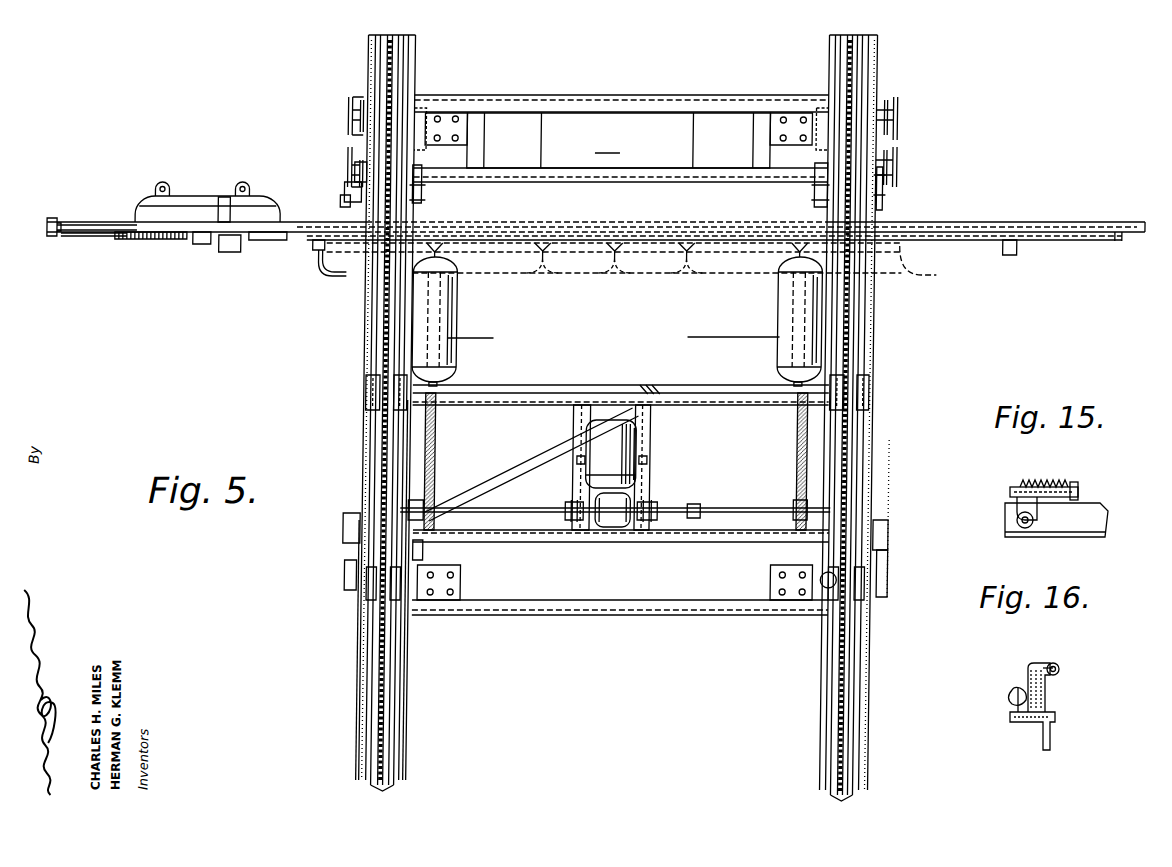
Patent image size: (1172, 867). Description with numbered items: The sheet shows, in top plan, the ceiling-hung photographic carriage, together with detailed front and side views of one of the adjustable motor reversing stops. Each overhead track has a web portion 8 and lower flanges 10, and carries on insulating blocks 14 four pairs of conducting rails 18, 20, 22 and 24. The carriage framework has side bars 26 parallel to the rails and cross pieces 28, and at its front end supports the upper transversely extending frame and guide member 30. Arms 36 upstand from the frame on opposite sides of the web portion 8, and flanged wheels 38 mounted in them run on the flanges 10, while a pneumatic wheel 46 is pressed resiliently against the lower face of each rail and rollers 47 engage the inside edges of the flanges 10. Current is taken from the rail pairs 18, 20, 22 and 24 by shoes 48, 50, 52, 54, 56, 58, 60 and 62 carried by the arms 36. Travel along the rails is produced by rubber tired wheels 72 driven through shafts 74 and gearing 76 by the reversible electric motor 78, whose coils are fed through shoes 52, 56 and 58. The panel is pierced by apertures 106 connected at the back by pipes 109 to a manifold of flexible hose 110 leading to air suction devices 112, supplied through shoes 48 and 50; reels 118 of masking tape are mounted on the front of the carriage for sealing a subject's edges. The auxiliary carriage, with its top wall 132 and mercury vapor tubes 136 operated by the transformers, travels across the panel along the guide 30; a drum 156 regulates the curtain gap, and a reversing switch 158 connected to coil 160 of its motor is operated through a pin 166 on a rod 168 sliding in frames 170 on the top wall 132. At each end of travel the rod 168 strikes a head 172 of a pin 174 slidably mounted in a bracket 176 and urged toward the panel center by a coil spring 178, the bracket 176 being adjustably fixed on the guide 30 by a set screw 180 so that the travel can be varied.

In FIG. 5, the web portion 8 is at (392, 692).
In FIG. 5, the lower flanges 10 is at (395, 750).
In FIG. 5, the insulating blocks 14 is at (373, 390).
In FIG. 5, the conducting rails 18 is at (364, 675).
In FIG. 5, the conducting rails 20 is at (406, 663).
In FIG. 5, the conducting rails 22 is at (826, 720).
In FIG. 5, the conducting rails 24 is at (866, 736).
In FIG. 5, the side bars 26 is at (633, 610).
In FIG. 5, the cross pieces 28 is at (658, 106).
In FIG. 5, the upper frame and guide member 30 is at (294, 222).
In FIG. 16, the upper frame and guide member 30 is at (1057, 712).
In FIG. 5, the arms 36 is at (376, 162).
In FIG. 5, the flanged wheels 38 is at (348, 176).
In FIG. 5, the pneumatic wheel 46 is at (784, 575).
In FIG. 5, the rollers 47 is at (832, 592).
In FIG. 5, the shoe 48 is at (356, 197).
In FIG. 5, the shoe 50 is at (354, 545).
In FIG. 5, the shoe 52 is at (426, 186).
In FIG. 5, the shoe 54 is at (433, 545).
In FIG. 5, the shoe 56 is at (820, 190).
In FIG. 5, the shoe 58 is at (800, 512).
In FIG. 5, the shoe 60 is at (886, 193).
In FIG. 5, the shoe 62 is at (889, 528).
In FIG. 5, the rubber tired wheels 72 is at (862, 500).
In FIG. 5, the shafts 74 is at (694, 508).
In FIG. 5, the gearing 76 is at (614, 530).
In FIG. 5, the electric motor 78 is at (618, 443).
In FIG. 5, the apertures 106 is at (319, 250).
In FIG. 5, the pipes 109 is at (330, 270).
In FIG. 5, the flexible hose 110 is at (440, 443).
In FIG. 5, the air suction devices 112 is at (448, 360).
In FIG. 5, the reels 118 is at (352, 115).
In FIG. 5, the top wall 132 is at (152, 212).
In FIG. 5, the illuminating members 136 is at (163, 239).
In FIG. 5, the drum 156 is at (252, 192).
In FIG. 5, the reversing switch 158 is at (210, 197).
In FIG. 5, the coil 160 is at (250, 243).
In FIG. 5, the pin 166 is at (515, 118).
In FIG. 5, the rod 168 is at (230, 243).
In FIG. 5, the frames 170 is at (243, 252).
In FIG. 5, the head 172 is at (90, 236).
In FIG. 15, the head 172 is at (1080, 495).
In FIG. 16, the head 172 is at (1060, 664).
In FIG. 15, the pin 174 is at (1080, 488).
In FIG. 16, the pin 174 is at (1060, 668).
In FIG. 5, the bracket 176 is at (56, 236).
In FIG. 15, the bracket 176 is at (1042, 516).
In FIG. 16, the bracket 176 is at (1048, 684).
In FIG. 15, the coil spring 178 is at (1062, 479).
In FIG. 5, the set screw 180 is at (54, 222).
In FIG. 15, the set screw 180 is at (1037, 528).
In FIG. 16, the set screw 180 is at (1014, 704).